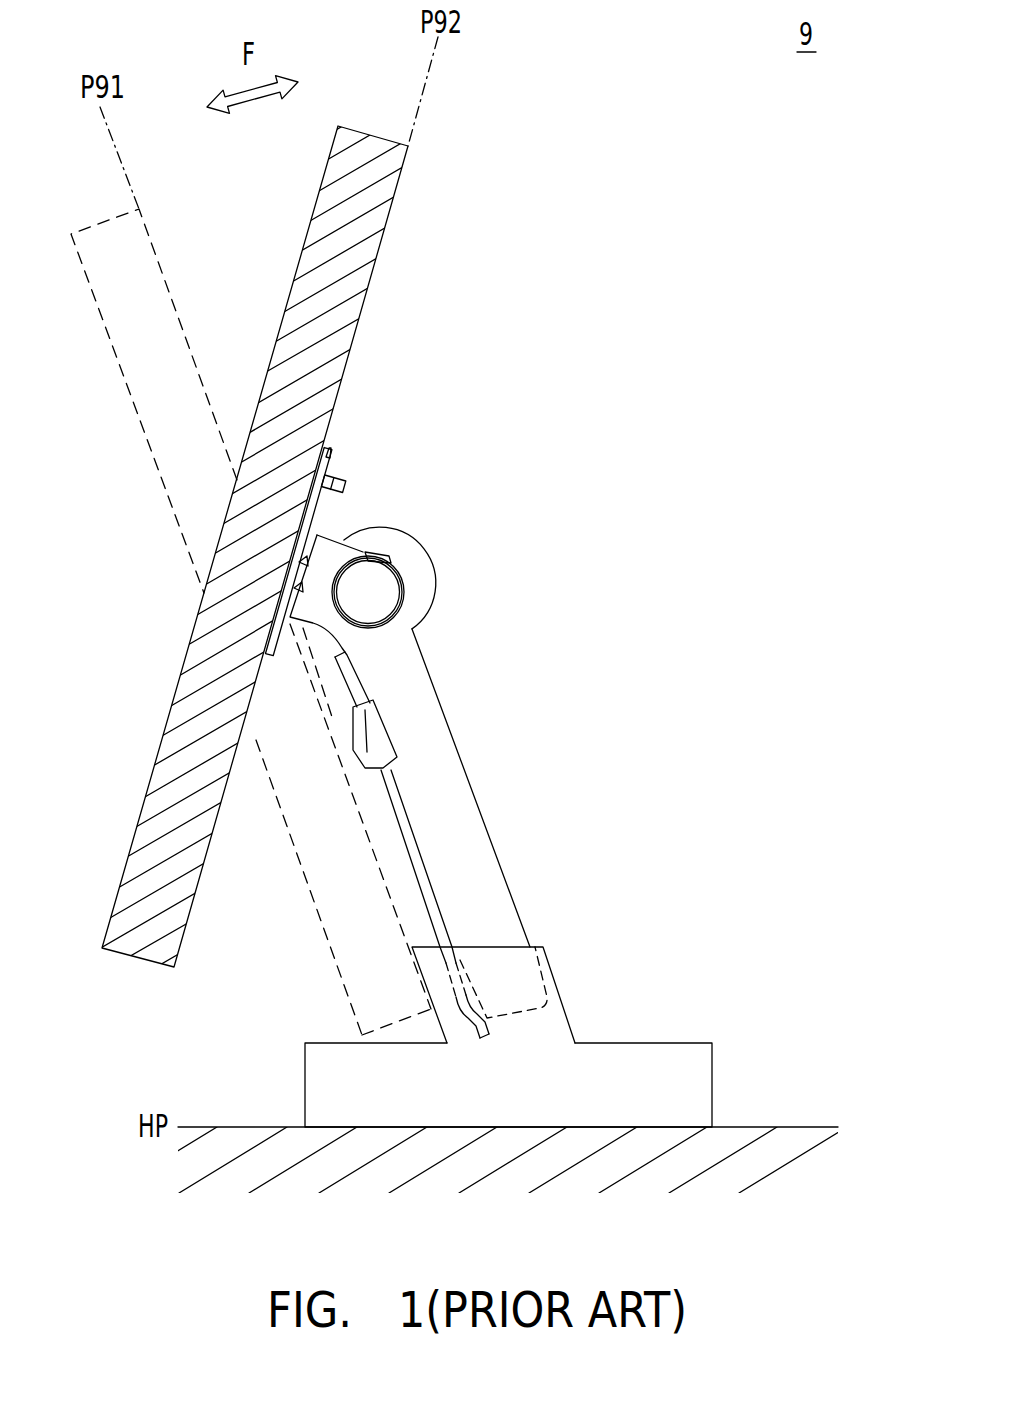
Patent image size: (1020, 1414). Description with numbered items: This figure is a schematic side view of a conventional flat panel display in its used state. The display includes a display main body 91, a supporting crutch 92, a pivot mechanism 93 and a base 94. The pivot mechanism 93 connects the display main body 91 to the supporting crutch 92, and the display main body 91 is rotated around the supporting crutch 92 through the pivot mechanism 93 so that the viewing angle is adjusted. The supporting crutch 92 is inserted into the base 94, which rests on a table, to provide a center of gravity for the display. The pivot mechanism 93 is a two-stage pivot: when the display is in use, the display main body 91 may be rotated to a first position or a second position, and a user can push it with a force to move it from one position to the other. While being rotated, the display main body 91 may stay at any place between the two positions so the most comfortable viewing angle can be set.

The display main body 91 is at (393, 213).
The supporting crutch 92 is at (447, 740).
The pivot mechanism 93 is at (368, 592).
The base 94 is at (683, 1078).